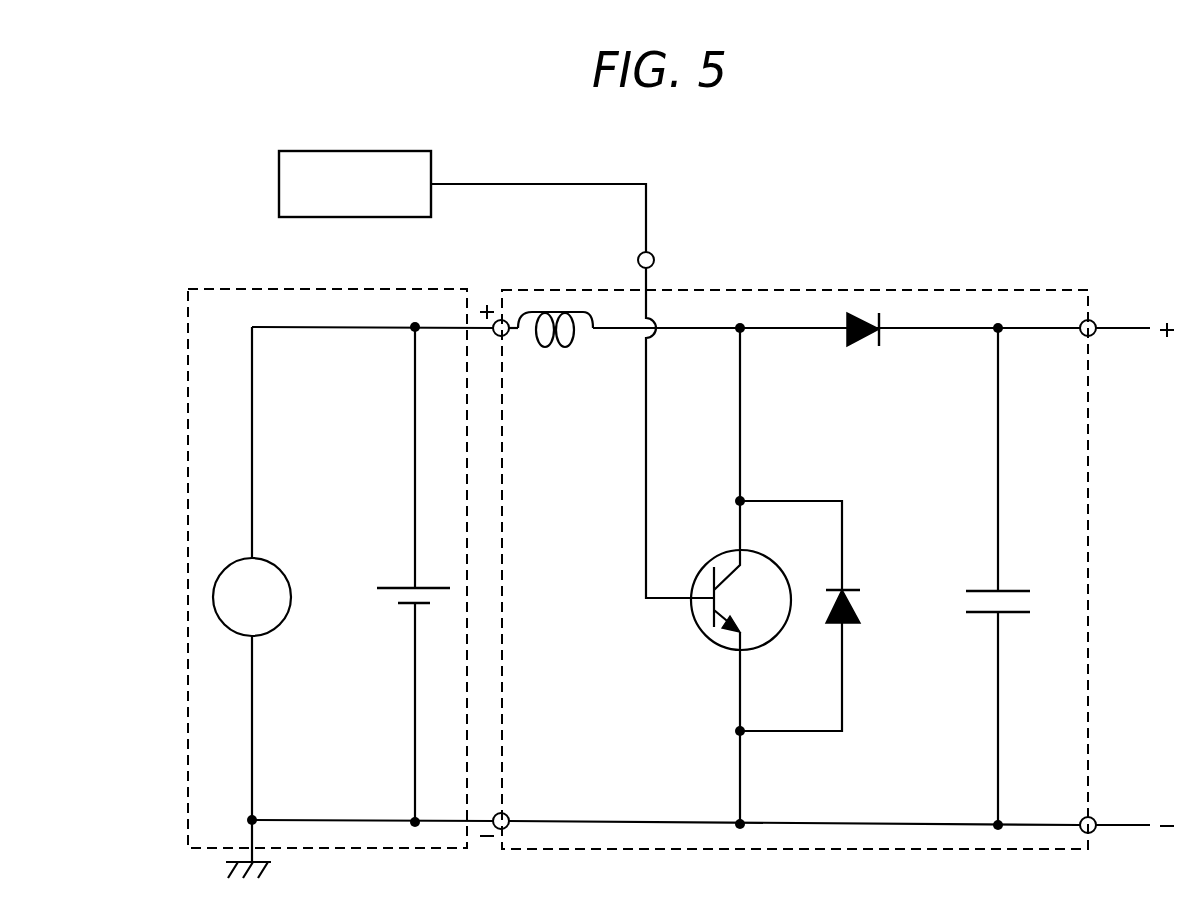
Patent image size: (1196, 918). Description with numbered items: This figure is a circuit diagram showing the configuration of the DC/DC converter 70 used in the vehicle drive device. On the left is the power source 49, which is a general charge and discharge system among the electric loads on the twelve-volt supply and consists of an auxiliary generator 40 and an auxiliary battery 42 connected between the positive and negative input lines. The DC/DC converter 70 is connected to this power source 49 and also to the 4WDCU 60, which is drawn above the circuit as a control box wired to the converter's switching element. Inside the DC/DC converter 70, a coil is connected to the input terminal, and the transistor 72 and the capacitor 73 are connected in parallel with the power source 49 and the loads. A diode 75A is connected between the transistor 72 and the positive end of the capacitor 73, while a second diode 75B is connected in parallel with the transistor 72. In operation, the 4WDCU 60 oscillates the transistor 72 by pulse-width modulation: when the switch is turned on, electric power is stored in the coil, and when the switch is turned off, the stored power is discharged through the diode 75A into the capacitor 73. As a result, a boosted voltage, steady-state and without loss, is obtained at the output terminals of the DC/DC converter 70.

The 4WDCU 60 is at (279, 186).
The power source 49 is at (378, 289).
The auxiliary generator 40 is at (280, 625).
The auxiliary battery 42 is at (389, 588).
The DC/DC converter 70 is at (962, 290).
The diode 75A is at (862, 348).
The diode 75B is at (858, 612).
The transistor 72 is at (700, 630).
The capacitor 73 is at (1020, 590).